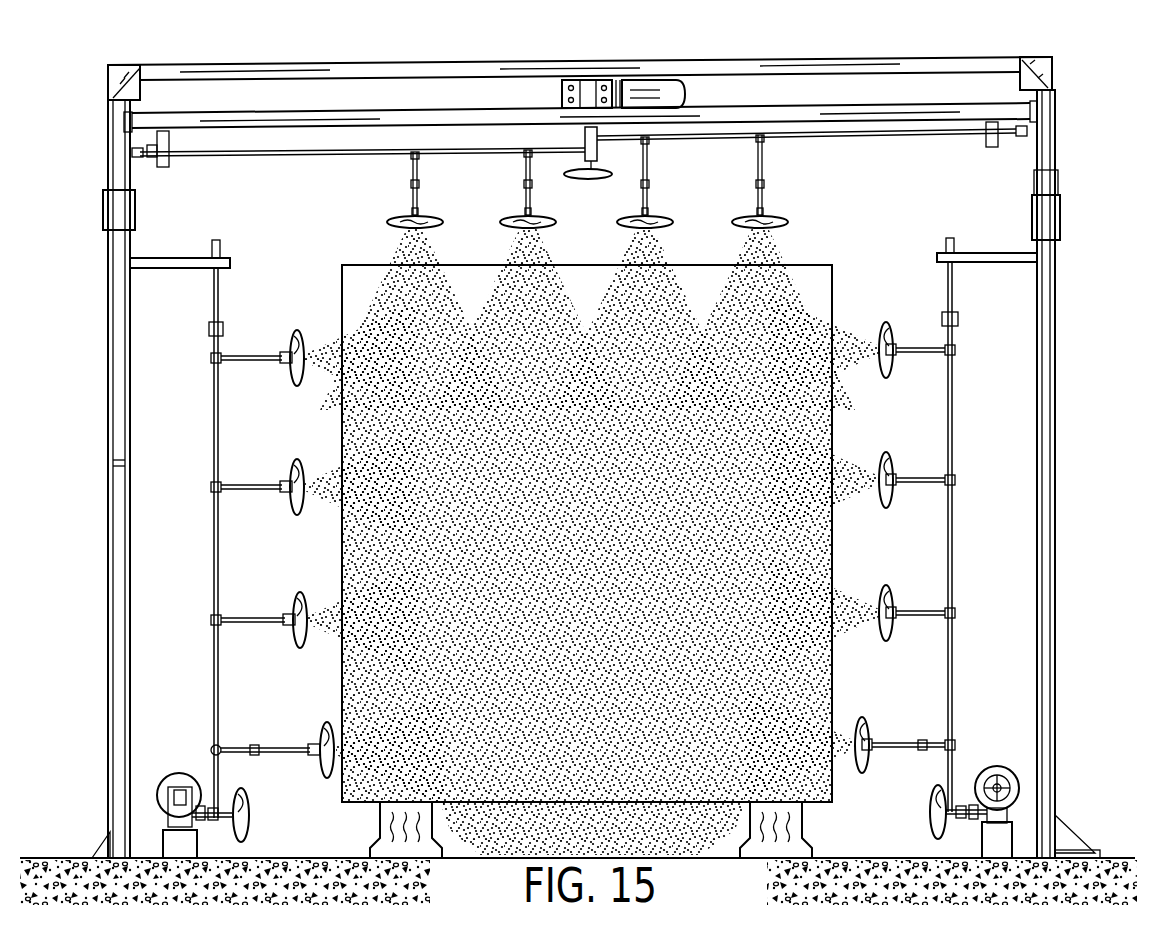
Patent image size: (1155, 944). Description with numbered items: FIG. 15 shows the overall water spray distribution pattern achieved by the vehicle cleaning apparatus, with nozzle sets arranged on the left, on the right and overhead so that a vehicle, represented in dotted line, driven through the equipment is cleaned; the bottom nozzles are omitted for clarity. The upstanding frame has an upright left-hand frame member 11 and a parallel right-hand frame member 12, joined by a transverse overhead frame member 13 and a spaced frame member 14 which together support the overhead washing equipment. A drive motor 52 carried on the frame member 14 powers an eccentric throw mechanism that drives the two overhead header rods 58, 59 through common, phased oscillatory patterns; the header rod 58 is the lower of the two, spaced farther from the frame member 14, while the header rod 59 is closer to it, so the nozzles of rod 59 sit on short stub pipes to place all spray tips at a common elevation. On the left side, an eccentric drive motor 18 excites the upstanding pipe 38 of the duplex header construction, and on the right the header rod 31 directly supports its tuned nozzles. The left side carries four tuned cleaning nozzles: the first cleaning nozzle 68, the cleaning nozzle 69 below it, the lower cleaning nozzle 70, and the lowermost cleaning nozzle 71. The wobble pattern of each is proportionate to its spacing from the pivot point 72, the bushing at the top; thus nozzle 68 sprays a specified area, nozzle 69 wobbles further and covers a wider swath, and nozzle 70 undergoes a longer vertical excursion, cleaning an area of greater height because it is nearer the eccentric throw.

The left-hand frame member 11 is at (114, 401).
The right-hand frame member 12 is at (1047, 398).
The transverse overhead frame member 13 is at (897, 68).
The spaced frame member 14 is at (247, 120).
The eccentric drive motor 18 is at (175, 780).
The header rod 31 is at (955, 560).
The upstanding pipe 38 is at (214, 548).
The drive motor 52 is at (657, 92).
The header rod 58 is at (357, 152).
The header rod 59 is at (870, 134).
The first cleaning nozzle 68 is at (250, 353).
The cleaning nozzle 69 is at (259, 471).
The lower cleaning nozzle 70 is at (254, 616).
The lowermost cleaning nozzle 71 is at (253, 742).
The pivot point 72 is at (228, 260).